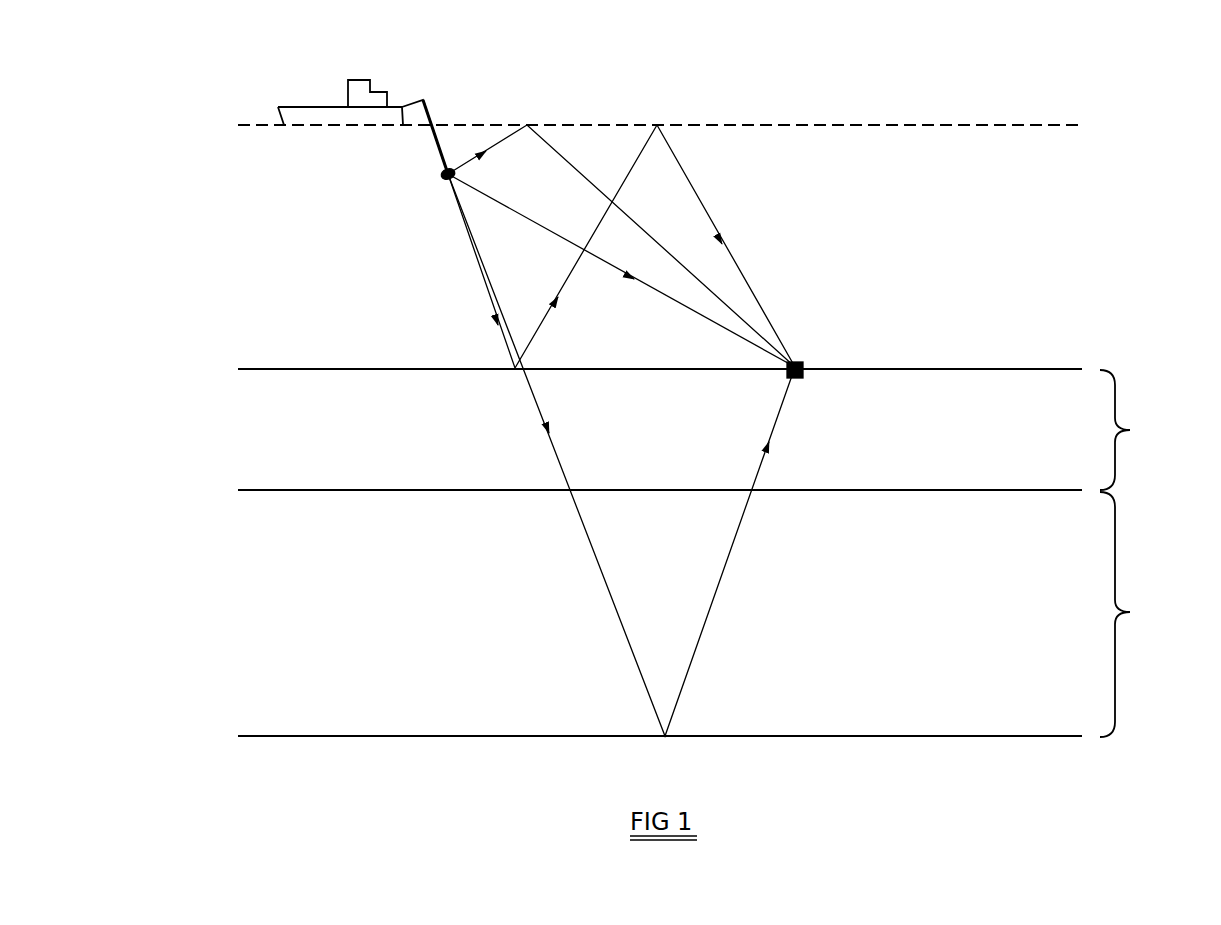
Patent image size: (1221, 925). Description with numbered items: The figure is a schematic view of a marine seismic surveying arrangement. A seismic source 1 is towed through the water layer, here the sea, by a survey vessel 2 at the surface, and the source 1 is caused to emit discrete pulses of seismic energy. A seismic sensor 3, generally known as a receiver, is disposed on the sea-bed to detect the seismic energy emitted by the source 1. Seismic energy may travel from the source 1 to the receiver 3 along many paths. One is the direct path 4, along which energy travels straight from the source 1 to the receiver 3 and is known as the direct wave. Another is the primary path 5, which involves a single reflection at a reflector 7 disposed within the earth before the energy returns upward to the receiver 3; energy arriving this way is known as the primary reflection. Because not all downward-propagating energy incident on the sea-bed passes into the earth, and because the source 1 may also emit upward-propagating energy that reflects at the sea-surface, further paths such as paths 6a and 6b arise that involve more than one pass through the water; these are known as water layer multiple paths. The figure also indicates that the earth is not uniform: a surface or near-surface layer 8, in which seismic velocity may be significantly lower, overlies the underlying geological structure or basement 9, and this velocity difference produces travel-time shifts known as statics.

The seismic source 1 is at (441, 175).
The survey vessel 2 is at (360, 80).
The seismic sensor 3 is at (798, 362).
The direct path 4 is at (690, 313).
The primary path 5 is at (707, 627).
The water layer multiple path 6a is at (692, 187).
The water layer multiple path 6b is at (563, 153).
The reflector 7 is at (869, 736).
The surface or near-surface layer 8 is at (1137, 430).
The basement 9 is at (1143, 614).